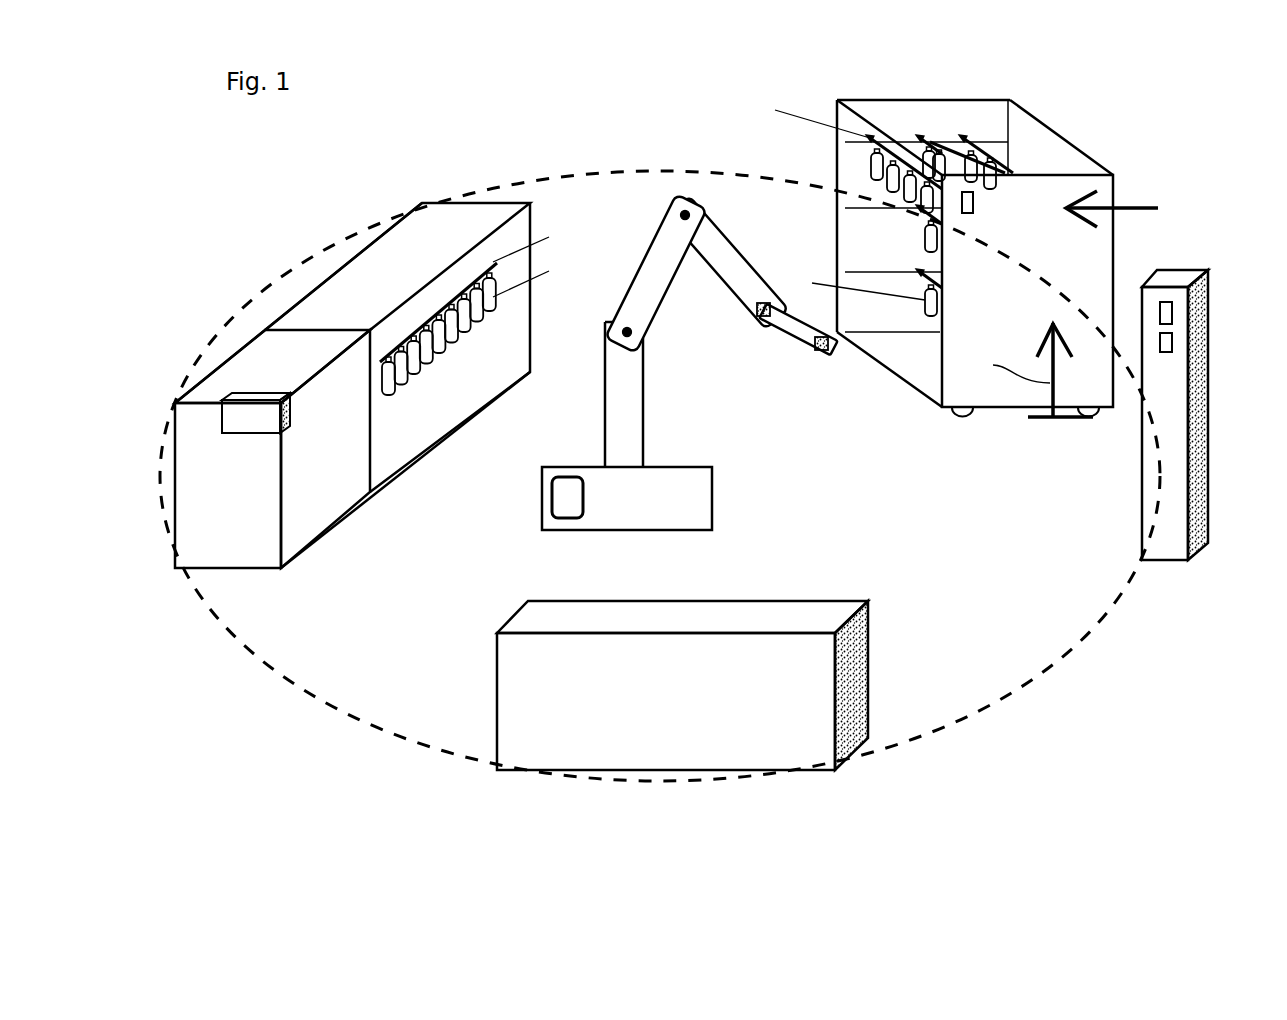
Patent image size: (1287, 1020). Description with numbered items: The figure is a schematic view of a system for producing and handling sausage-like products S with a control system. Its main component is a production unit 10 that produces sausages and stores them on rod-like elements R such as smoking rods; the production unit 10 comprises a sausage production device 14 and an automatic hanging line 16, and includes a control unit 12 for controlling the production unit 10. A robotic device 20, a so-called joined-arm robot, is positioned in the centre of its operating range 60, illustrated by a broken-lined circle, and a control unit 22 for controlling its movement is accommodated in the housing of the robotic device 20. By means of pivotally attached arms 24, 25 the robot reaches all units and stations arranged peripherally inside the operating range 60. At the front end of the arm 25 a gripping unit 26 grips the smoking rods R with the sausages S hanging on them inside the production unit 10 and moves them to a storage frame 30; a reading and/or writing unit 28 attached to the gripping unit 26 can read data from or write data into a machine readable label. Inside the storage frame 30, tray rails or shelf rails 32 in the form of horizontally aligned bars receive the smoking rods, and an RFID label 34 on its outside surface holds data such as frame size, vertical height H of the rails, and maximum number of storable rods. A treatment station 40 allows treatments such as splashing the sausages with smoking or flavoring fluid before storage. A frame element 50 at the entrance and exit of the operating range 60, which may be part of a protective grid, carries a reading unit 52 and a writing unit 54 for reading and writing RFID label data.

The production unit 10 is at (262, 230).
The control unit 12 is at (238, 398).
The sausage production device 14 is at (288, 357).
The automatic hanging line 16 is at (417, 232).
The robotic device 20 is at (677, 176).
The control unit 22 is at (562, 498).
The arm 24 is at (668, 246).
The arm 25 is at (728, 270).
The gripping unit 26 is at (792, 337).
The reading and/or writing unit 28 is at (822, 352).
The storage frame 30 is at (958, 256).
The tray rails or shelf rails 32 is at (856, 141).
The RFID label 34 is at (973, 213).
The treatment station 40 is at (861, 590).
The frame element 50 is at (1205, 376).
The reading unit 52 is at (1172, 313).
The writing unit 54 is at (1172, 343).
The operating range 60 is at (1062, 662).